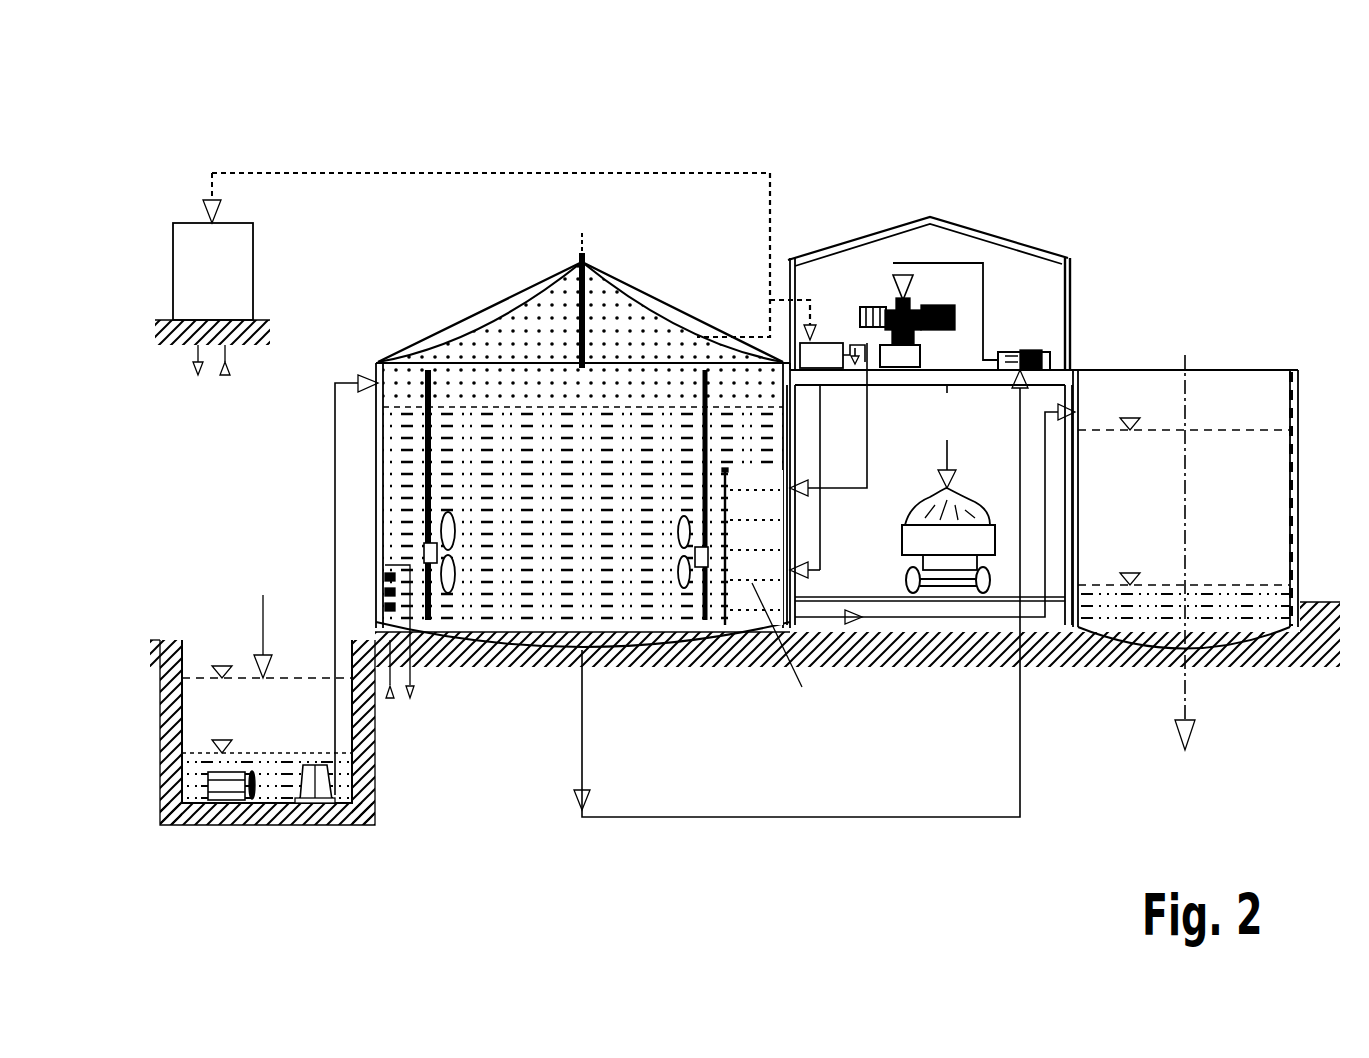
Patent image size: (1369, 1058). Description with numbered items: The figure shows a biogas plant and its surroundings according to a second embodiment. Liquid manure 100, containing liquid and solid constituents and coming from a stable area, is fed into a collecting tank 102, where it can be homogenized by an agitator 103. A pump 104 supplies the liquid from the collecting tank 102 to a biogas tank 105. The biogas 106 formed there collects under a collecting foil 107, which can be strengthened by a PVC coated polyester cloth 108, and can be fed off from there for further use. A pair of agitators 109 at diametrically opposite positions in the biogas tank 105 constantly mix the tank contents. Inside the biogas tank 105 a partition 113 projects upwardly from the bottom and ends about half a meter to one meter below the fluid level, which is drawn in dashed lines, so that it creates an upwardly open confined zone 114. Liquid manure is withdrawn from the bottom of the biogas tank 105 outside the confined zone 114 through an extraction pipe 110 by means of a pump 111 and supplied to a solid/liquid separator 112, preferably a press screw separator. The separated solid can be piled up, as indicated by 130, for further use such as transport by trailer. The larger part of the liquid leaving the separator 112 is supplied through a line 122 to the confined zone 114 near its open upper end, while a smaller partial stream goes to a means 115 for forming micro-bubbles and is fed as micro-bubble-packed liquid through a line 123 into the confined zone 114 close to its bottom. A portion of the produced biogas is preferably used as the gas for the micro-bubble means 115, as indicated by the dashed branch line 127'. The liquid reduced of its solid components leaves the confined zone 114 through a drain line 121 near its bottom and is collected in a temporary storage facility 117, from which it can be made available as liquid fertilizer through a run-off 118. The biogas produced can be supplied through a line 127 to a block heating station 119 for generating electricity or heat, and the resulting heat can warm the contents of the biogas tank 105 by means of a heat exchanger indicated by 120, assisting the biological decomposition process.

The liquid manure 100 is at (281, 611).
The collecting tank 102 is at (207, 705).
The agitator 103 is at (210, 812).
The pump 104 is at (323, 805).
The biogas tank 105 is at (632, 583).
The biogas 106 is at (635, 345).
The collecting foil 107 is at (510, 312).
The PVC coated polyester cloth 108 is at (425, 338).
The agitators 109 is at (717, 718).
The extraction pipe 110 is at (826, 548).
The pump 111 is at (1040, 355).
The solid/liquid separator 112 is at (935, 307).
The partition 113 is at (727, 500).
The confined zone 114 is at (797, 656).
The means for forming micro-bubbles 115 is at (833, 352).
The temporary storage facility 117 is at (1200, 470).
The run-off 118 is at (1184, 765).
The block heating station 119 is at (212, 259).
The heat exchanger 120 is at (311, 547).
The drain line 121 is at (927, 617).
The line 122 is at (870, 452).
The line 123 is at (815, 563).
The line 127 is at (491, 203).
The branch line 127' is at (813, 219).
The piled up separated solid 130 is at (948, 489).